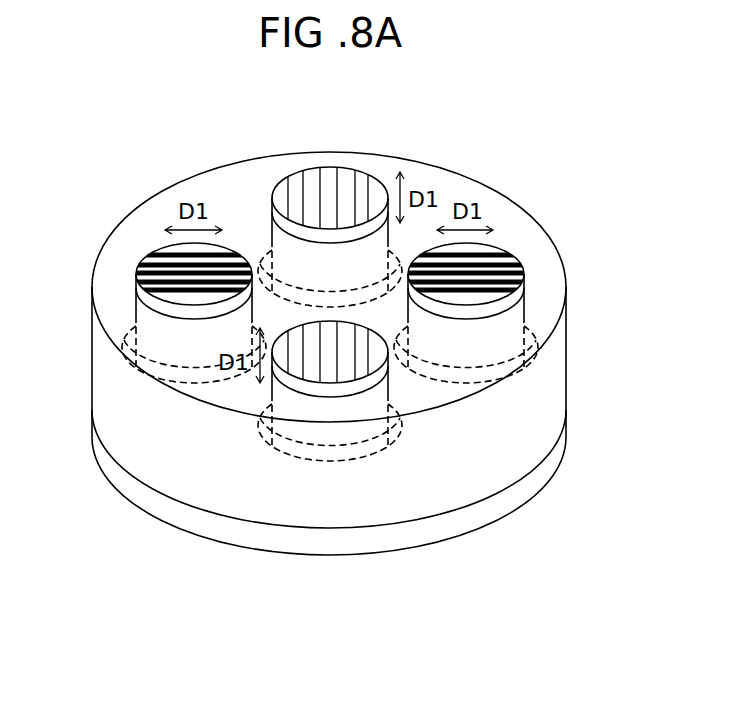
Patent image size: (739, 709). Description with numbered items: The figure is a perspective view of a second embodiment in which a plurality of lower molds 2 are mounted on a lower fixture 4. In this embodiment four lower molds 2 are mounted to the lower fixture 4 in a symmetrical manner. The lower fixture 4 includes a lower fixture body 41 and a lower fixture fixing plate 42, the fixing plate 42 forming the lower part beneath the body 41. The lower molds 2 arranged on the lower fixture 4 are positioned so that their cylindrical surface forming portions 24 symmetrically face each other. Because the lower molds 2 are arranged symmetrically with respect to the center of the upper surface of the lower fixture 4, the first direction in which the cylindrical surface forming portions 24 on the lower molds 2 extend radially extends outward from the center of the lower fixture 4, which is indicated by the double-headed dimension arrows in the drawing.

The lower mold 2 is at (330, 343).
The cylindrical surface forming portion 24 is at (143, 275).
The lower fixture 4 is at (366, 315).
The lower fixture body 41 is at (566, 352).
The lower fixture fixing plate 42 is at (566, 412).